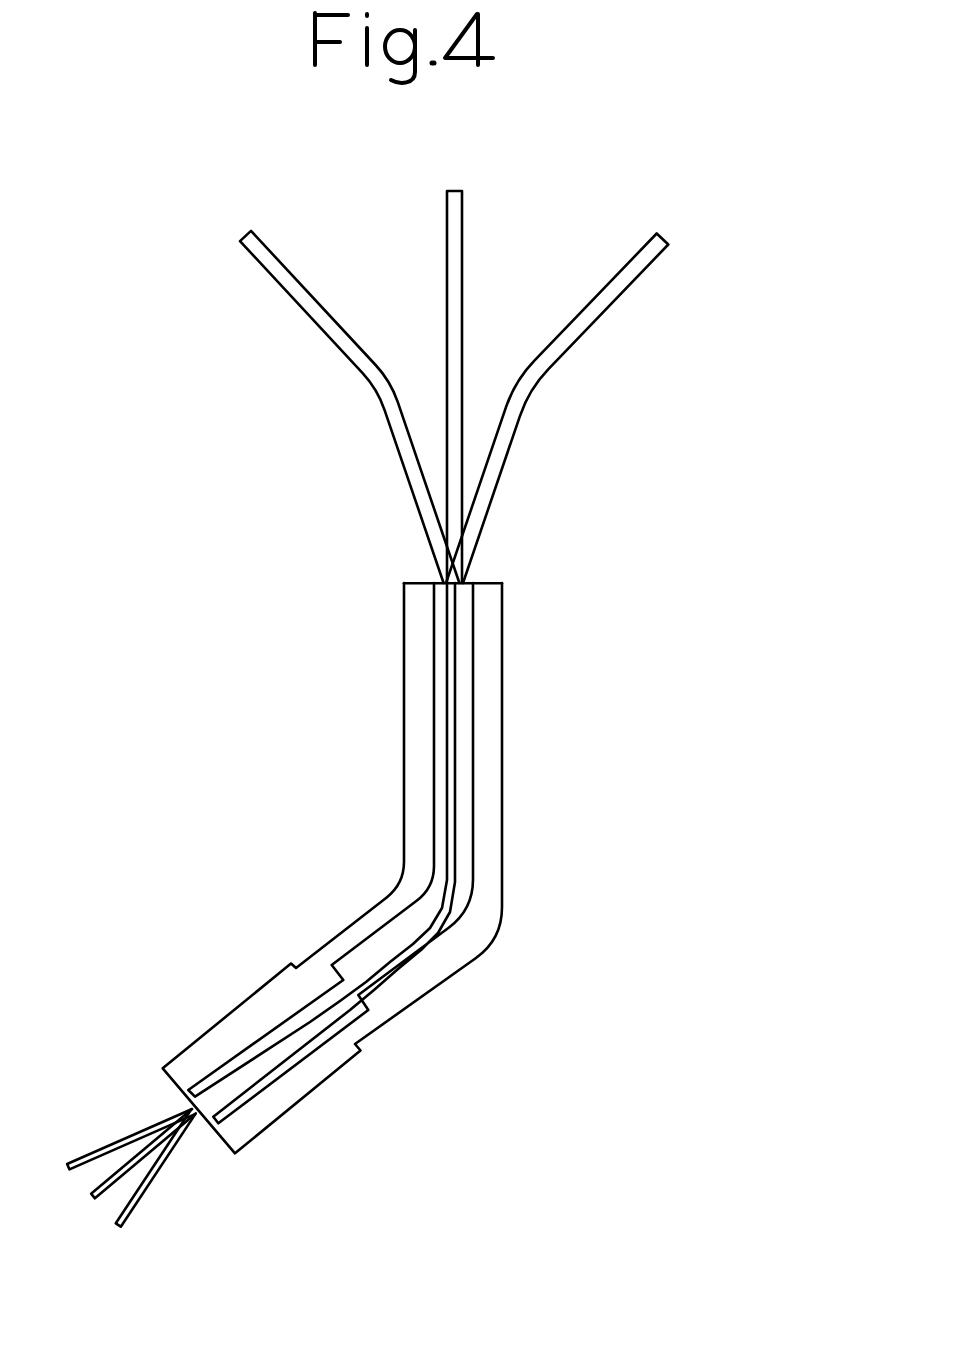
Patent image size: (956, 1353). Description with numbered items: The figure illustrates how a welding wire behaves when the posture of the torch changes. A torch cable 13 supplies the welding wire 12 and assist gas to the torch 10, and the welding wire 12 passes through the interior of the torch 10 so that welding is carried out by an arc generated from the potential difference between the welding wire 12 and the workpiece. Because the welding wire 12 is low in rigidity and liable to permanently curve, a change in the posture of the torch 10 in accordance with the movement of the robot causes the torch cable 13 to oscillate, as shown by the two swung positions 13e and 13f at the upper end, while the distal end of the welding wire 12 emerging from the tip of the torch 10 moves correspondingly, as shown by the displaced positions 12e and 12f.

The torch 10 is at (487, 798).
The welding wire 12 is at (450, 713).
The welding wire distal end position 12e is at (90, 1150).
The welding wire distal end position 12f is at (157, 1167).
The torch cable 13 is at (453, 252).
The torch cable oscillated position 13e is at (517, 410).
The torch cable oscillated position 13f is at (386, 410).